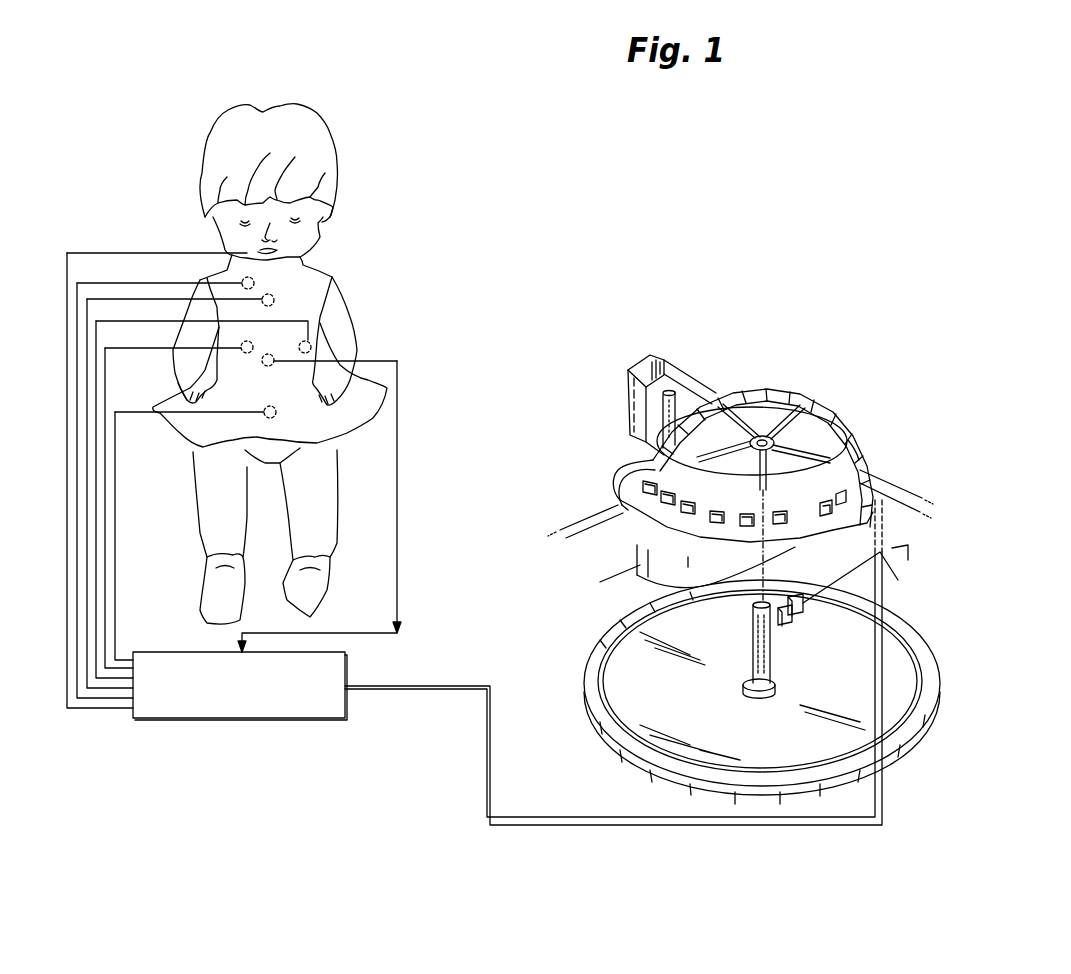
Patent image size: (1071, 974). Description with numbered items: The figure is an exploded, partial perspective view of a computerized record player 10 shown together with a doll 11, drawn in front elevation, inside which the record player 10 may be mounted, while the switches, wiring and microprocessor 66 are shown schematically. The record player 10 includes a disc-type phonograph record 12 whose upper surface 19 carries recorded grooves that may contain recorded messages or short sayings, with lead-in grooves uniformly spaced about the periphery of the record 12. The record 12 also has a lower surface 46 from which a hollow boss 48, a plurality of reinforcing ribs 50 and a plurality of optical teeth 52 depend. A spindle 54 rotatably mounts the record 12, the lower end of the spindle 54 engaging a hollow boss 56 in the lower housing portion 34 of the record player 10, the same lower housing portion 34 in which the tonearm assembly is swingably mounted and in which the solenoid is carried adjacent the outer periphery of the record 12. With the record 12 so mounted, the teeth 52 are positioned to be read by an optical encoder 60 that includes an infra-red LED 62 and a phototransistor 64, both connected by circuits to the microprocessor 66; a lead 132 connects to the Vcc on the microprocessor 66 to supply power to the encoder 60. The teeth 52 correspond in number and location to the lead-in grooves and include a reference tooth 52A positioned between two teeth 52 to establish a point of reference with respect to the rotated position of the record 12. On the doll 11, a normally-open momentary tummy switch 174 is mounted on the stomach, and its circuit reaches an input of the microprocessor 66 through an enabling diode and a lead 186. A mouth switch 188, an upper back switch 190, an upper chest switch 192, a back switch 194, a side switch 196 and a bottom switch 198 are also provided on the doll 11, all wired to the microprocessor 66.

The computerized record player 10 is at (846, 352).
The doll 11 is at (333, 116).
The disc-type phonograph record 12 is at (858, 420).
The upper surface 19 is at (857, 432).
The lower housing portion 34 is at (908, 472).
The lower surface 46 is at (840, 527).
The hollow boss 48 is at (640, 453).
The reinforcing ribs 50 is at (750, 430).
The optical teeth 52 is at (628, 518).
The reference tooth 52A is at (830, 508).
The spindle 54 is at (750, 655).
The hollow boss 56 is at (758, 695).
The optical encoder 60 is at (878, 652).
The infra-red LED 62 is at (808, 620).
The phototransistor 64 is at (790, 625).
The microprocessor 66 is at (190, 722).
The lead 132 is at (455, 672).
The tummy switch 174 is at (277, 348).
The lead 186 is at (397, 503).
The mouth switch 188 is at (283, 245).
The upper back switch 190 is at (263, 280).
The upper chest switch 192 is at (280, 290).
The back switch 194 is at (257, 340).
The side switch 196 is at (317, 342).
The bottom switch 198 is at (290, 403).